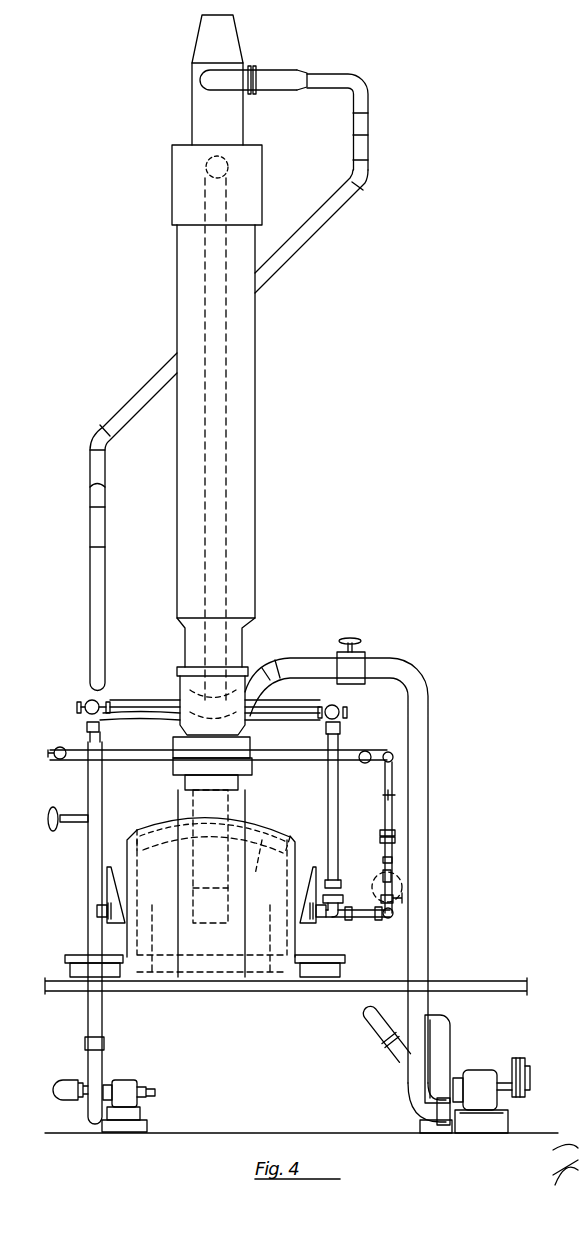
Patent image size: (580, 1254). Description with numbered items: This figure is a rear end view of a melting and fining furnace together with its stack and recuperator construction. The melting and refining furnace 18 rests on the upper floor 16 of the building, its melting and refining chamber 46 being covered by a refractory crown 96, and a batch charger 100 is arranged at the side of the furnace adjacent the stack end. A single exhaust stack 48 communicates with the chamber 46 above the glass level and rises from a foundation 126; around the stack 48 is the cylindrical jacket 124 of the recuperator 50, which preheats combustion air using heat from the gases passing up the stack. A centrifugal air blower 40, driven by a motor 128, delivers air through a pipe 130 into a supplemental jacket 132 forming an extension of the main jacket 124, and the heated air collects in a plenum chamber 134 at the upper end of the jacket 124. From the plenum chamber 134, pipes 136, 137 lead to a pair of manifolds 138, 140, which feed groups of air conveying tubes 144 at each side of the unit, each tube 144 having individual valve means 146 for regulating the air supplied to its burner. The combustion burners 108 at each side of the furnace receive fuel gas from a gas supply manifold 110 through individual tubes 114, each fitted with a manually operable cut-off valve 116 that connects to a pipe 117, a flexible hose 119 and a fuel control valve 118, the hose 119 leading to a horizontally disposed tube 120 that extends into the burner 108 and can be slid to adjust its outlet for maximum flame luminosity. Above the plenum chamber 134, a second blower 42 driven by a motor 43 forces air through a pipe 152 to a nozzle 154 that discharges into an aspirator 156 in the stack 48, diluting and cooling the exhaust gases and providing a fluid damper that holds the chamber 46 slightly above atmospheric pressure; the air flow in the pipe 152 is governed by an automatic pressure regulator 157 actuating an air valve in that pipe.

The upper level or floor 16 is at (512, 981).
The melting and refining furnace 18 is at (171, 806).
The air blower 40 is at (448, 1028).
The blower 42 is at (102, 1065).
The motor 43 is at (130, 1080).
The melting and refining chamber 46 is at (268, 830).
The exhaust stack 48 is at (192, 107).
The recuperator 50 is at (269, 322).
The crown 96 is at (253, 827).
The batch charger 100 is at (80, 923).
The combustion burner 108 is at (117, 907).
The gas supply manifold 110 is at (115, 760).
The tube 114 is at (392, 782).
The cut-off valve 116 is at (397, 795).
The pipe 117 is at (393, 815).
The fuel control valve 118 is at (400, 898).
The flexible tube or hose 119 is at (393, 877).
The horizontally disposed tube 120 is at (390, 917).
The jacket 124 is at (255, 400).
The foundation 126 is at (245, 962).
The motor 128 is at (480, 1070).
The pipe 130 is at (428, 722).
The supplemental jacket 132 is at (177, 670).
The plenum chamber 134 is at (172, 160).
The pipe 136 is at (225, 365).
The pipe 137 is at (148, 700).
The manifold 138 is at (338, 705).
The manifold 140 is at (88, 700).
The air conveying tube 144 is at (88, 727).
The valve means 146 is at (341, 898).
The pipe or tube 152 is at (90, 522).
The nozzle 154 is at (313, 74).
The entrance member or aspirator 156 is at (300, 70).
The automatic pressure regulator 157 is at (50, 830).